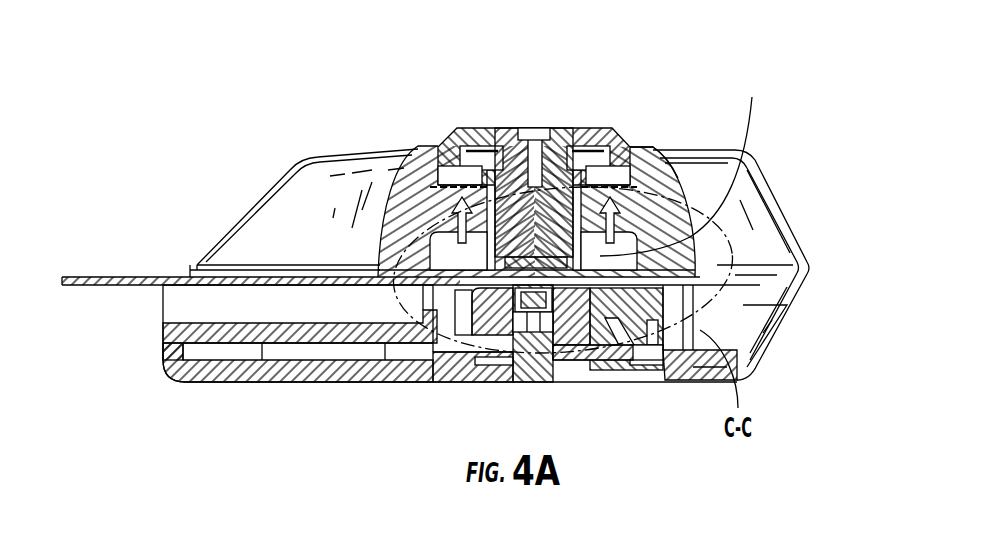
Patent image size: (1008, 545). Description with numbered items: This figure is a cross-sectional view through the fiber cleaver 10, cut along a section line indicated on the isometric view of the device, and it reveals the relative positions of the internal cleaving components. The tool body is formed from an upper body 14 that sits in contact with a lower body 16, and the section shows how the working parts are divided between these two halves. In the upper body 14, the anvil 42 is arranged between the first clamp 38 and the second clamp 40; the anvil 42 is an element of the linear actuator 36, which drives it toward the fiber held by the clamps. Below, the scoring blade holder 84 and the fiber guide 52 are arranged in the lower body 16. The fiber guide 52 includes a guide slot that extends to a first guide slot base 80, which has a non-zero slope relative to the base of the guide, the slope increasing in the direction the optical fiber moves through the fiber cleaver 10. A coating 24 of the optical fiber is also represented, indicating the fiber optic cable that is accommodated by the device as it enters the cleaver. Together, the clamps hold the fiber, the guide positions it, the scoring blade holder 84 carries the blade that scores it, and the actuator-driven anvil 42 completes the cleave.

The fiber cleaver 10 is at (322, 133).
The upper body 14 is at (765, 208).
The lower body 16 is at (785, 293).
The coating 24 is at (107, 284).
The linear actuator 36 is at (568, 128).
The first clamp 38 is at (398, 272).
The second clamp 40 is at (657, 170).
The anvil 42 is at (497, 135).
The fiber guide 52 is at (495, 313).
The first guide slot base 80 is at (683, 161).
The scoring blade holder 84 is at (535, 310).